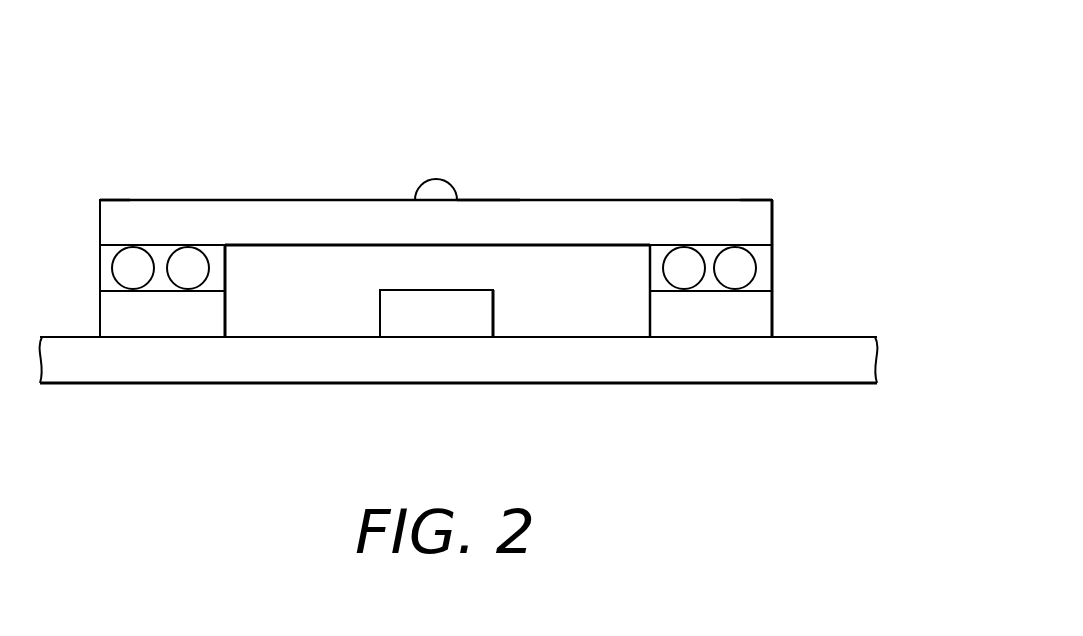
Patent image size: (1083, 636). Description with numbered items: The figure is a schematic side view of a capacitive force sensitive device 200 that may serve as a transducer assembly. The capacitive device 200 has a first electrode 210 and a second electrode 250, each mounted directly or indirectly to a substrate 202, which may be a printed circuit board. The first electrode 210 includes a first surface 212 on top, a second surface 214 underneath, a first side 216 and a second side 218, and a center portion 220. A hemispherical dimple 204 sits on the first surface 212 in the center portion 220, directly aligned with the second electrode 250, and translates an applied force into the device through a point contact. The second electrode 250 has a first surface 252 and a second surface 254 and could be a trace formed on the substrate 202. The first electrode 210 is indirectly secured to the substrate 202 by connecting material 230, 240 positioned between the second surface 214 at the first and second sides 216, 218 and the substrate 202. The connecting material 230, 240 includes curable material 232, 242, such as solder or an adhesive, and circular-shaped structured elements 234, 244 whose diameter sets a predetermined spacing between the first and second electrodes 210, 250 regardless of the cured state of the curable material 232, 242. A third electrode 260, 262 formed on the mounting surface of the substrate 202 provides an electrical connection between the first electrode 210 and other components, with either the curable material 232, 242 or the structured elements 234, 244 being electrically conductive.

The capacitive device 200 is at (635, 92).
The substrate 202 is at (250, 362).
The dimple 204 is at (436, 182).
The first electrode 210 is at (755, 212).
The first surface 212 is at (298, 200).
The second surface 214 is at (400, 247).
The first side 216 is at (754, 199).
The second side 218 is at (113, 199).
The center portion 220 is at (472, 197).
The connecting material 230 is at (782, 247).
The curable material 232 is at (650, 280).
The structured elements 234 is at (735, 263).
The connecting material 240 is at (90, 247).
The curable material 242 is at (213, 282).
The structured elements 244 is at (133, 262).
The second electrode 250 is at (480, 313).
The first surface 252 is at (425, 290).
The second surface 254 is at (418, 337).
The third electrode 260 is at (755, 313).
The third electrode 262 is at (115, 310).